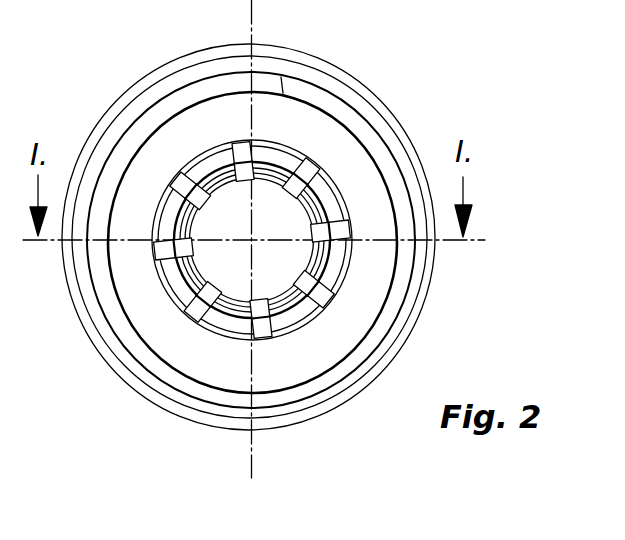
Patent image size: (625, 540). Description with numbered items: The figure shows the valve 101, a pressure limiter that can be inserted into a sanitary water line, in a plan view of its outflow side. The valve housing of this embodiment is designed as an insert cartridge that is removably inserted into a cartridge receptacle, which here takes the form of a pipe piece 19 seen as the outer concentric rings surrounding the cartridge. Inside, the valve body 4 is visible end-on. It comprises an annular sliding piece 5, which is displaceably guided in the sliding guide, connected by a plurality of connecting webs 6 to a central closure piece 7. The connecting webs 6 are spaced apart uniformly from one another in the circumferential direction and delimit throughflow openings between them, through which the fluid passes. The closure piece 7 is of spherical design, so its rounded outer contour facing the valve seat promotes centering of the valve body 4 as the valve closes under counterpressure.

The valve 101 is at (467, 91).
The pipe piece 19 is at (419, 298).
The sliding piece 5 is at (207, 160).
The valve body 4 is at (327, 177).
The connecting webs 6 is at (333, 312).
The closure piece 7 is at (278, 279).